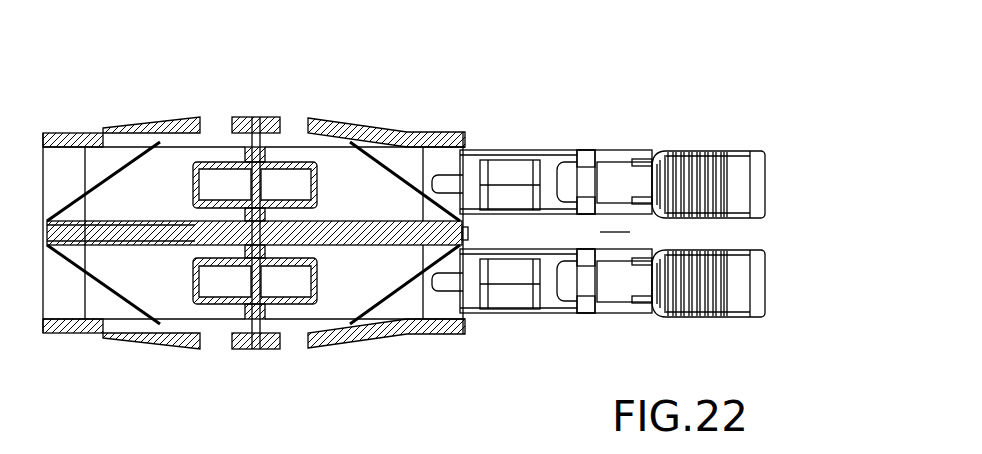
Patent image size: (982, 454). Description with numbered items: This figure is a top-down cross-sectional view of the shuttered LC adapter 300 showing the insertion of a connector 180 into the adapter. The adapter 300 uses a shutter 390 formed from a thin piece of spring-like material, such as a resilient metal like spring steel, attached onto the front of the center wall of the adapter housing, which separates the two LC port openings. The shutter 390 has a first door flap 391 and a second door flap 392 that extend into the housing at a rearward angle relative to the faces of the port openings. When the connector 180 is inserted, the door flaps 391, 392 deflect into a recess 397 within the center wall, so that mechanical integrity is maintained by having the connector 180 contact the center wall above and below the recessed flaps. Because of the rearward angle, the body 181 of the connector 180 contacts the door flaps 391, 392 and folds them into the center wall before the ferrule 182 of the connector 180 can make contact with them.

The shuttered LC adapter 300 is at (238, 80).
The recess 397 is at (360, 212).
The second door flap 392 is at (398, 172).
The first door flap 391 is at (383, 302).
The shutter 390 is at (467, 133).
The ferrule 182 is at (431, 294).
The body 181 is at (525, 314).
The connector 180 is at (767, 193).